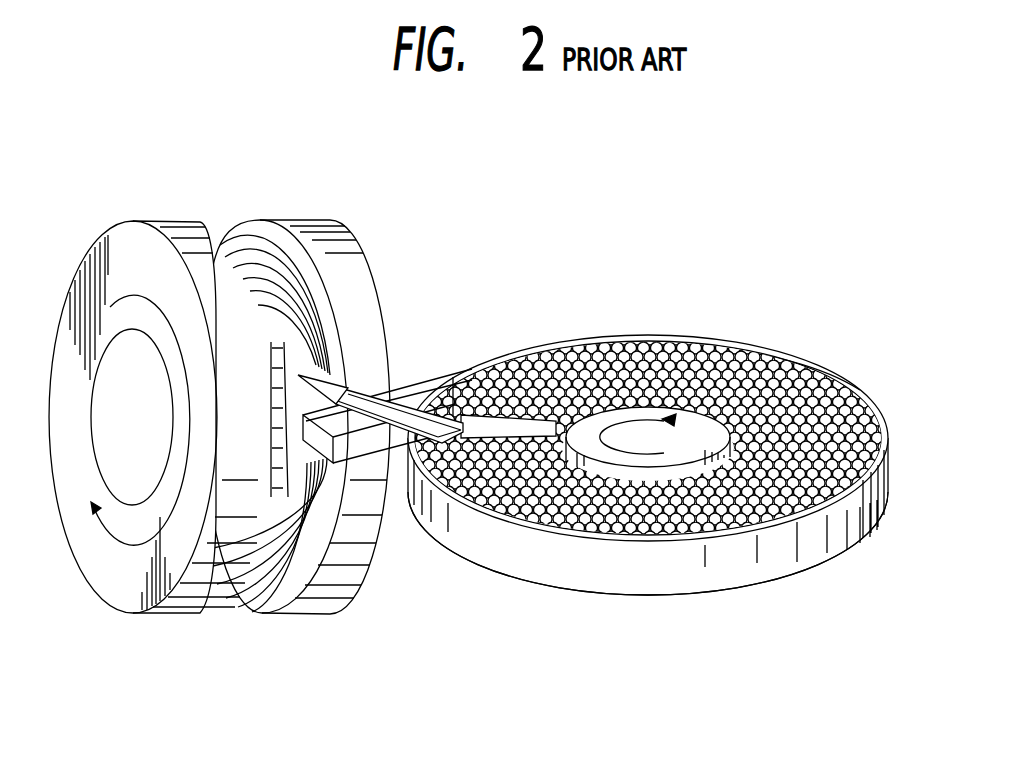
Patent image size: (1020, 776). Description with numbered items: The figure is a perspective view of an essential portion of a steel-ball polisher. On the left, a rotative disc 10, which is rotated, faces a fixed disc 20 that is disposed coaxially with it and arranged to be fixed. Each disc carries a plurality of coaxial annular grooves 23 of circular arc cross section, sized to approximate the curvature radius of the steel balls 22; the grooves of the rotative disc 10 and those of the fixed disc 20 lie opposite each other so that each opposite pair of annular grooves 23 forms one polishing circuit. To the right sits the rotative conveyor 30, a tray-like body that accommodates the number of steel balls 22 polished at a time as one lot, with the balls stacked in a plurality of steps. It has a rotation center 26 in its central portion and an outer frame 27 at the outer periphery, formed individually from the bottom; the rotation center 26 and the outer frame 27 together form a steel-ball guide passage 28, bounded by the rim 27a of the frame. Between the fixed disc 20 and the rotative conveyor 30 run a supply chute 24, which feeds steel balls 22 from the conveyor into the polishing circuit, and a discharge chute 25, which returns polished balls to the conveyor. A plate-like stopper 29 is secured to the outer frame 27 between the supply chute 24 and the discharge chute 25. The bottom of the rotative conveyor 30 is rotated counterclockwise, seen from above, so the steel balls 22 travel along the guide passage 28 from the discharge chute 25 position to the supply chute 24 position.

The rotative disc 10 is at (90, 230).
The fixed disc 20 is at (350, 243).
The steel balls 22 is at (763, 378).
The annular grooves 23 is at (263, 533).
The supply chute 24 is at (352, 450).
The discharge chute 25 is at (393, 387).
The rotation center 26 is at (665, 410).
The outer frame 27 is at (483, 543).
The bowl rim 27a is at (845, 408).
The steel-ball guide passage 28 is at (803, 384).
The plate-like stopper 29 is at (562, 380).
The rotative conveyor 30 is at (788, 596).